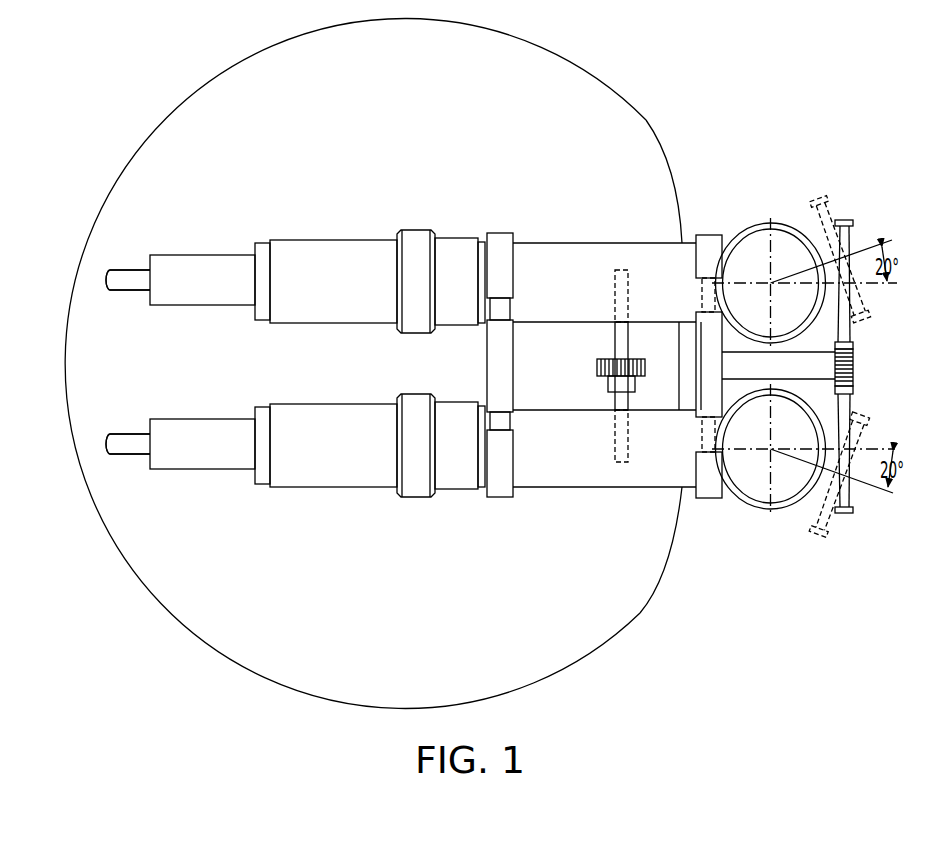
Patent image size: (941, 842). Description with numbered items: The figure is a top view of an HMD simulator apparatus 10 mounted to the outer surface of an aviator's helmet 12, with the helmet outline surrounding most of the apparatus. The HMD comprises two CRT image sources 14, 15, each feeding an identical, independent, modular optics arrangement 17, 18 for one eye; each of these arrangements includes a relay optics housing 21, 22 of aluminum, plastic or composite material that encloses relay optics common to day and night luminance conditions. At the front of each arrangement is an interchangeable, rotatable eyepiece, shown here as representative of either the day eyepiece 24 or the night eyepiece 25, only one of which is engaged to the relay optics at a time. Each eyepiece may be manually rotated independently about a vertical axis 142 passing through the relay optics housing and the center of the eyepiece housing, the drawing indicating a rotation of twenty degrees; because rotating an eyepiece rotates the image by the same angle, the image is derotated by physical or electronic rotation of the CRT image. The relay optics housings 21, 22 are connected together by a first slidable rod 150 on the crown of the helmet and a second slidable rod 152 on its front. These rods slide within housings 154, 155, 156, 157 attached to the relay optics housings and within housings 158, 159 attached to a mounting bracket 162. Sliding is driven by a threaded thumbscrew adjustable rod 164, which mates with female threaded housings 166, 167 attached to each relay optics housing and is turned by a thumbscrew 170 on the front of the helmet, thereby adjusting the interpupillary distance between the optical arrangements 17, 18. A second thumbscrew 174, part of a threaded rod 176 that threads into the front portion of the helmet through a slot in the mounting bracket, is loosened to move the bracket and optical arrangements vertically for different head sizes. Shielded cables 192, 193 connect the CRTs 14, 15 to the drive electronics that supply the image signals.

The HMD simulator apparatus 10 is at (116, 104).
The aviator's helmet 12 is at (207, 78).
The CRT image source 14 is at (341, 240).
The CRT image source 15 is at (341, 404).
The modular optics arrangement 17 is at (586, 215).
The modular optics arrangement 18 is at (587, 515).
The relay optics housing 21 is at (605, 243).
The relay optics housing 22 is at (665, 482).
The day eyepiece 24 is at (861, 214).
The night eyepiece 25 is at (862, 521).
The axis 142 is at (772, 286).
The first slidable rod 150 is at (508, 306).
The second slidable rod 152 is at (702, 440).
The housing 154 is at (496, 233).
The housing 155 is at (496, 497).
The housing 156 is at (710, 257).
The housing 157 is at (698, 465).
The housing 158 is at (487, 360).
The housing 159 is at (697, 319).
The mounting bracket 162 is at (677, 377).
The threaded thumbscrew adjustable rod 164 is at (615, 400).
The female threaded housing 166 is at (620, 305).
The female threaded housing 167 is at (618, 453).
The thumbscrew 170 is at (597, 367).
The second thumbscrew 174 is at (853, 355).
The threaded rod 176 is at (811, 379).
The shielded cable 192 is at (143, 278).
The shielded cable 193 is at (143, 440).